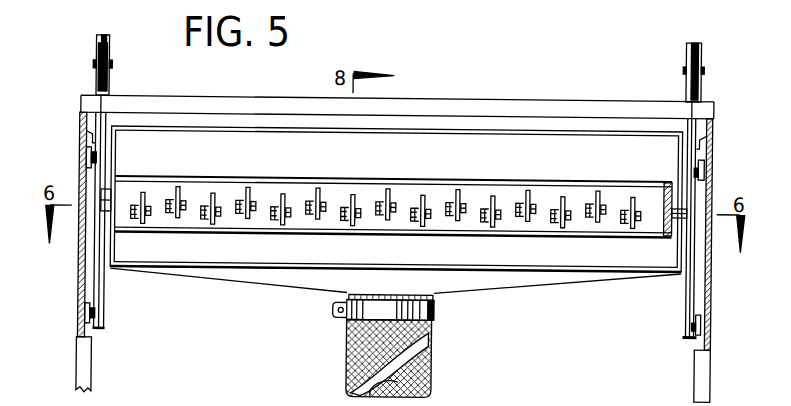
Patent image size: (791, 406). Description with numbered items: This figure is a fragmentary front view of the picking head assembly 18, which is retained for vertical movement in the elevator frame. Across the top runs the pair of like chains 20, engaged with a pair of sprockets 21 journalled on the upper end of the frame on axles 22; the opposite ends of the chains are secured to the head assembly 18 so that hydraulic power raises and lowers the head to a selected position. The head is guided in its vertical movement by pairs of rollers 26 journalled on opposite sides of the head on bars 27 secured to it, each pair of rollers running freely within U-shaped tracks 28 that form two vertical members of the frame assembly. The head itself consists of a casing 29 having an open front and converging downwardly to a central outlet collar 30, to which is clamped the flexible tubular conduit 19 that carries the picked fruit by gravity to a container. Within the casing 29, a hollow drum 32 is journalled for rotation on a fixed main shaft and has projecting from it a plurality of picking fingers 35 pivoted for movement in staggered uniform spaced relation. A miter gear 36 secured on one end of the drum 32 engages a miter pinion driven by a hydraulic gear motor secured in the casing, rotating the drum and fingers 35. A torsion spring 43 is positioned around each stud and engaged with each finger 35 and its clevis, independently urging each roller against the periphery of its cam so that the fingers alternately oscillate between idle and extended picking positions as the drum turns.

The picking head assembly 18 is at (511, 112).
The conduit 19 is at (435, 357).
The chains 20 is at (100, 101).
The sprockets 21 is at (106, 42).
The axles 22 is at (111, 70).
The rollers 26 is at (86, 155).
The bars 27 is at (101, 290).
The U-shaped tracks 28 is at (85, 374).
The casing 29 is at (228, 130).
The outlet collar 30 is at (437, 307).
The hollow drum 32 is at (223, 182).
The picking fingers 35 is at (212, 194).
The miter gear 36 is at (668, 185).
The torsion spring 43 is at (141, 196).